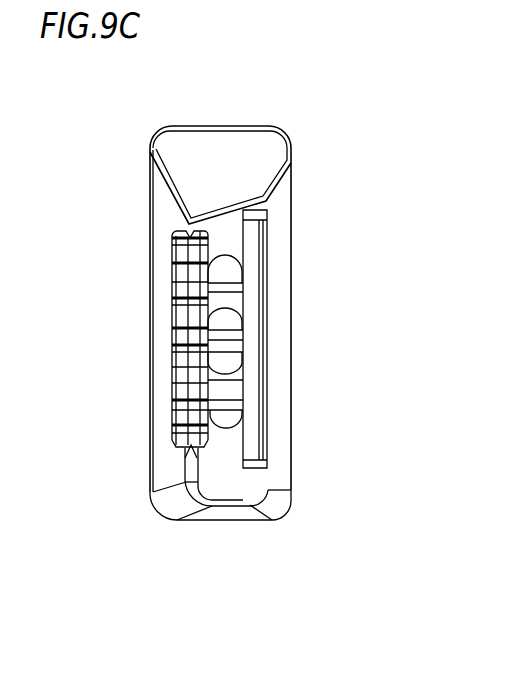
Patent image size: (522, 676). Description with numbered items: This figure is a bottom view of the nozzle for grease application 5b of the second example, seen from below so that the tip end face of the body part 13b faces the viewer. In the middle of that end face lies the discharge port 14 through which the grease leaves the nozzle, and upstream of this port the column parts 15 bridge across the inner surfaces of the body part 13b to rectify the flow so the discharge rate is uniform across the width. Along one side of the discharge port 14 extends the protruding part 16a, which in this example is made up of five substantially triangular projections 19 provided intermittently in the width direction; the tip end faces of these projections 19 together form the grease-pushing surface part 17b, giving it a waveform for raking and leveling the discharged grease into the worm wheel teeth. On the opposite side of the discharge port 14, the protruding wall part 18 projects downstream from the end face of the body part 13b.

The nozzle for grease application 5b is at (126, 201).
The body part 13b is at (255, 494).
The discharge port 14 is at (227, 418).
The column parts 15 is at (233, 290).
The protruding part 16a is at (180, 428).
The grease-pushing surface part 17b is at (180, 386).
The protruding wall part 18 is at (252, 237).
The projections 19 is at (178, 262).